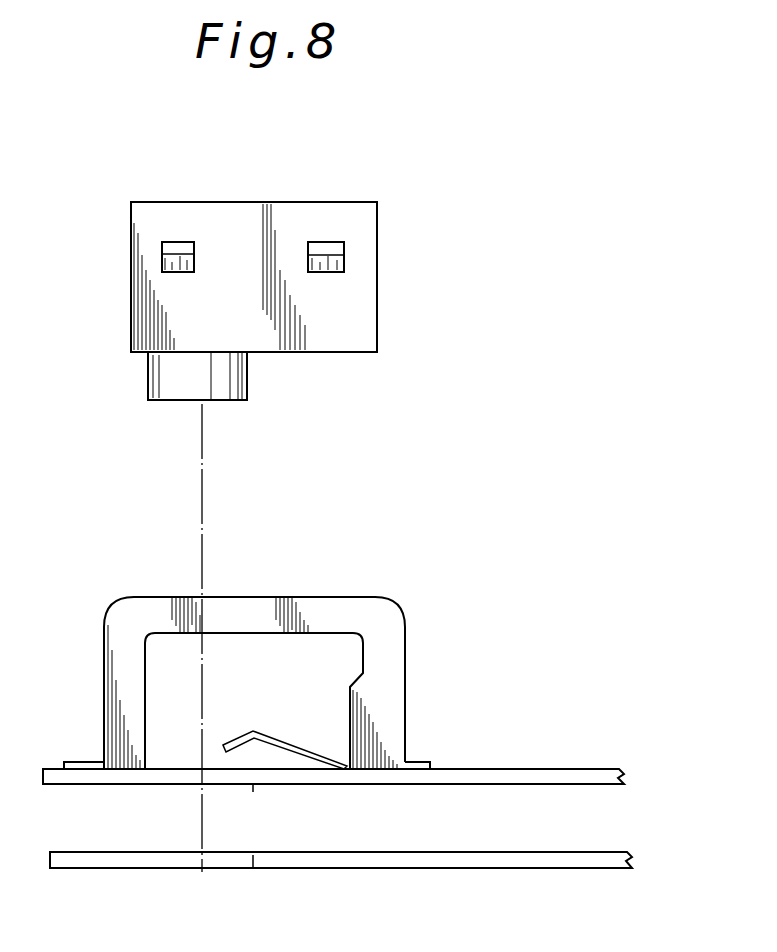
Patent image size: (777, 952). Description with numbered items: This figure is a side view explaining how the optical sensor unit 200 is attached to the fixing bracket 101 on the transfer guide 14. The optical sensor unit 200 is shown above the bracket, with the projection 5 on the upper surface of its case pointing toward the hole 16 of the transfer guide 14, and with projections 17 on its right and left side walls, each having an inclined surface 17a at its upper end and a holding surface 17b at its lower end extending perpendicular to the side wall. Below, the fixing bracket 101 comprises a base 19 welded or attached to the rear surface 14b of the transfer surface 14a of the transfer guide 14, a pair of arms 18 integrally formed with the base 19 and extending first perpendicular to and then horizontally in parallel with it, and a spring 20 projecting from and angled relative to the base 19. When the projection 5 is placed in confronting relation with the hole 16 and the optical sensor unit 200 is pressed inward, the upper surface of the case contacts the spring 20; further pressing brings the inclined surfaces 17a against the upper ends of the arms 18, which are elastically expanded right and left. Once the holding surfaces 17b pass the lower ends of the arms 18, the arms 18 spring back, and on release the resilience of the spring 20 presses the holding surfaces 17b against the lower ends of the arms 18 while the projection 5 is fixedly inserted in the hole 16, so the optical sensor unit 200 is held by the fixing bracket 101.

The optical sensor unit 200 is at (342, 263).
The projection 17 is at (181, 242).
The inclined surface 17a is at (192, 267).
The holding surface 17b is at (170, 242).
The projection 5 is at (249, 388).
The fixing bracket 101 is at (296, 621).
The arms 18 is at (388, 677).
The base 19 is at (82, 762).
The spring 20 is at (313, 747).
The transfer guide 14 is at (558, 775).
The transfer surface 14a is at (590, 788).
The rear surface 14b is at (485, 768).
The hole 16 is at (233, 785).